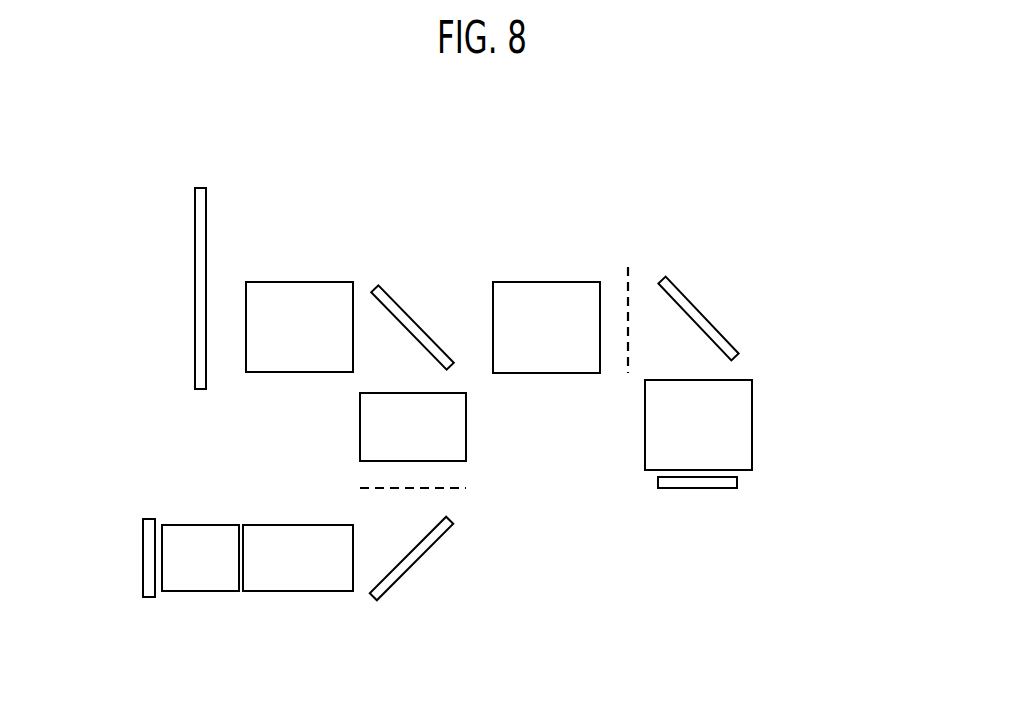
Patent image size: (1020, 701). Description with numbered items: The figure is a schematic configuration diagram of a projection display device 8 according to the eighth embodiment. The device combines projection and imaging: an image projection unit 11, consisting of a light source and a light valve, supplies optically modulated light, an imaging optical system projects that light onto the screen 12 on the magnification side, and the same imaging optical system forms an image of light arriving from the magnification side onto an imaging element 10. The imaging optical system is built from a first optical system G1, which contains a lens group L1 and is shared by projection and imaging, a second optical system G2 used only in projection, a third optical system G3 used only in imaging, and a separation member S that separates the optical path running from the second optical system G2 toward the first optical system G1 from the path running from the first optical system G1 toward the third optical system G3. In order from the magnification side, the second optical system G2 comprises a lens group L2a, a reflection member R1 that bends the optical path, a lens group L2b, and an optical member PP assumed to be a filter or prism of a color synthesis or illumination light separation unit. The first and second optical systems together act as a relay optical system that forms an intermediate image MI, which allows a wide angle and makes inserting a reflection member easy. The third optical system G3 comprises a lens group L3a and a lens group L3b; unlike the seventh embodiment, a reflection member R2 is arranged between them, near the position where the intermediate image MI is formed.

The projection display device 8 is at (428, 152).
The screen 12 is at (195, 329).
The image projection unit 11 is at (143, 577).
The imaging element 10 is at (717, 488).
The first optical system G1 is at (303, 205).
The lens group L1 is at (278, 282).
The separation member S is at (409, 309).
The second optical system G2 is at (575, 467).
The lens group L2a is at (466, 442).
The reflection member R1 is at (425, 553).
The lens group L2b is at (320, 591).
The optical member PP is at (217, 591).
The intermediate image MI is at (358, 488).
The third optical system G3 is at (857, 245).
The lens group L3a is at (582, 282).
The reflection member R2 is at (683, 293).
The lens group L3b is at (752, 407).